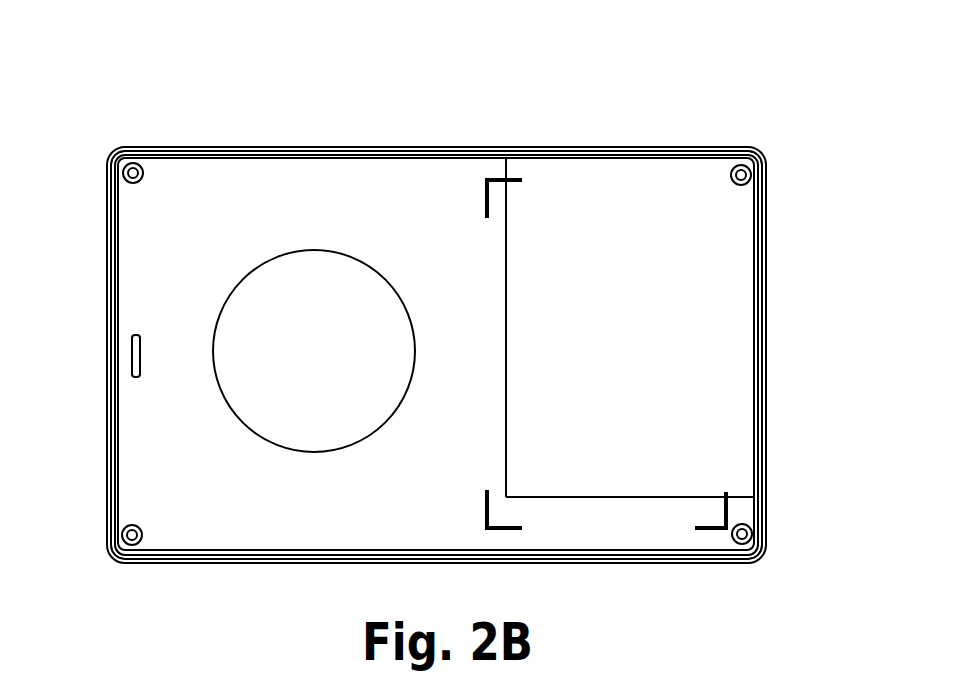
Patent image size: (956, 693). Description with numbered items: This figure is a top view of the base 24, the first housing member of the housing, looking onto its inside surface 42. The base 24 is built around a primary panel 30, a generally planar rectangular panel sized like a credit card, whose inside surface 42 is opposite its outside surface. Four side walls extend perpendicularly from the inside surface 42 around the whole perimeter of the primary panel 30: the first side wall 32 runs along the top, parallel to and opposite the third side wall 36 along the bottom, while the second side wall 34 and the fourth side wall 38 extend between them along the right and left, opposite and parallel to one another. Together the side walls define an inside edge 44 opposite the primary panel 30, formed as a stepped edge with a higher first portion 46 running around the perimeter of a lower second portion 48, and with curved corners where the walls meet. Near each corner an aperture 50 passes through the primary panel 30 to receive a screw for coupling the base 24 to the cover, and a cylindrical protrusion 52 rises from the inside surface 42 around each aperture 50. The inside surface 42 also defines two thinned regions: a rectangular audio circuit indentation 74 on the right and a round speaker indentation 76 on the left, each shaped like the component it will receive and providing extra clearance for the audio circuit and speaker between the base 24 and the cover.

The first housing member 24 is at (725, 113).
The primary panel 30 is at (419, 200).
The first side wall 32 is at (569, 148).
The second side wall 34 is at (767, 348).
The third side wall 36 is at (651, 562).
The fourth side wall 38 is at (107, 420).
The inside surface 42 is at (326, 187).
The inside edge 44 is at (249, 150).
The first portion 46 is at (663, 148).
The second portion 48 is at (610, 160).
The aperture 50 is at (122, 173).
The cylindrical protrusion 52 is at (136, 162).
The audio circuit indentation 74 is at (678, 497).
The speaker indentation 76 is at (250, 298).